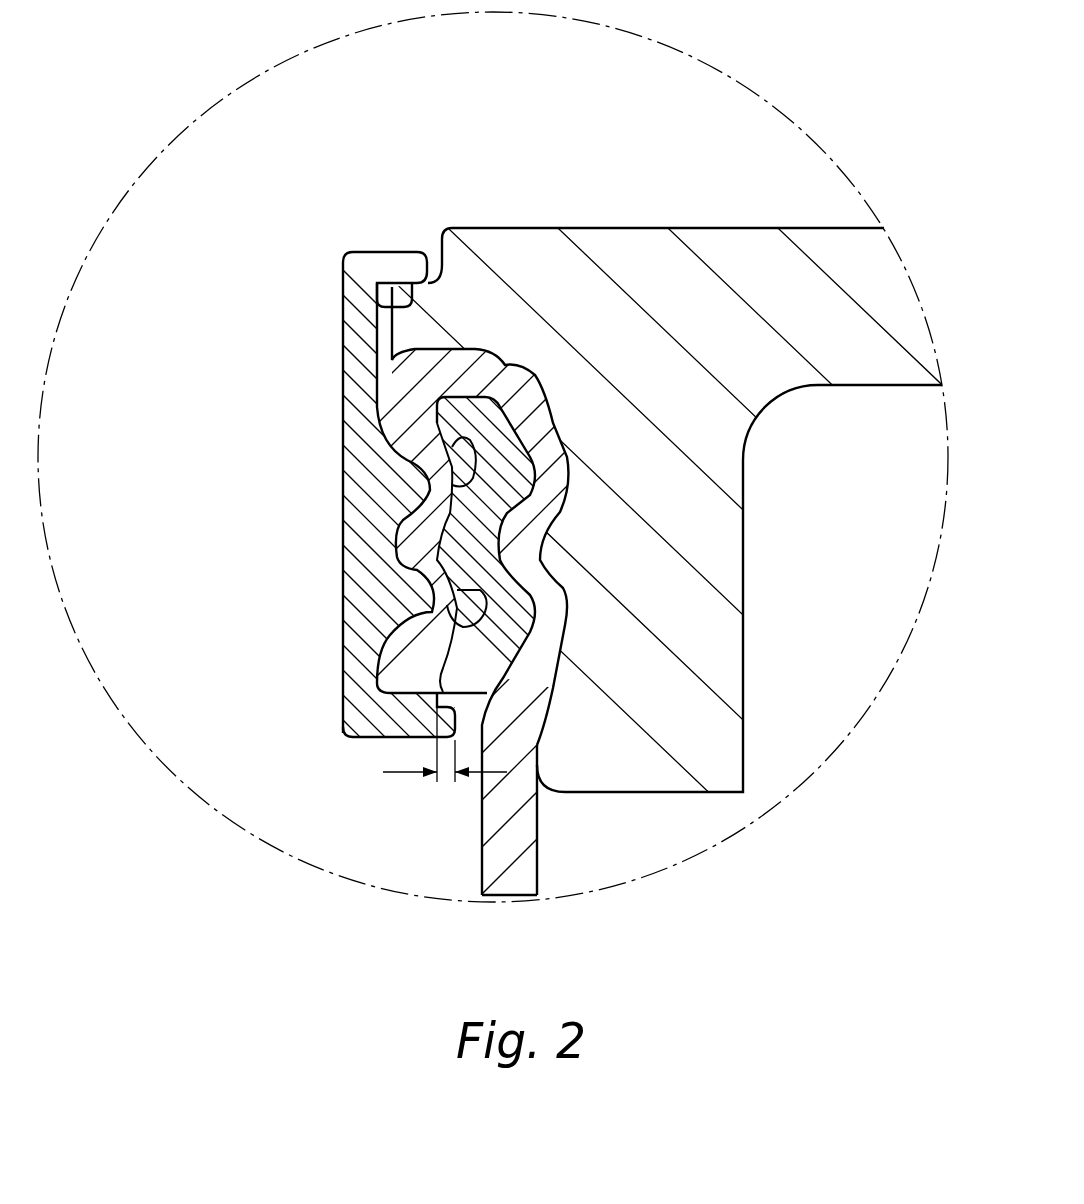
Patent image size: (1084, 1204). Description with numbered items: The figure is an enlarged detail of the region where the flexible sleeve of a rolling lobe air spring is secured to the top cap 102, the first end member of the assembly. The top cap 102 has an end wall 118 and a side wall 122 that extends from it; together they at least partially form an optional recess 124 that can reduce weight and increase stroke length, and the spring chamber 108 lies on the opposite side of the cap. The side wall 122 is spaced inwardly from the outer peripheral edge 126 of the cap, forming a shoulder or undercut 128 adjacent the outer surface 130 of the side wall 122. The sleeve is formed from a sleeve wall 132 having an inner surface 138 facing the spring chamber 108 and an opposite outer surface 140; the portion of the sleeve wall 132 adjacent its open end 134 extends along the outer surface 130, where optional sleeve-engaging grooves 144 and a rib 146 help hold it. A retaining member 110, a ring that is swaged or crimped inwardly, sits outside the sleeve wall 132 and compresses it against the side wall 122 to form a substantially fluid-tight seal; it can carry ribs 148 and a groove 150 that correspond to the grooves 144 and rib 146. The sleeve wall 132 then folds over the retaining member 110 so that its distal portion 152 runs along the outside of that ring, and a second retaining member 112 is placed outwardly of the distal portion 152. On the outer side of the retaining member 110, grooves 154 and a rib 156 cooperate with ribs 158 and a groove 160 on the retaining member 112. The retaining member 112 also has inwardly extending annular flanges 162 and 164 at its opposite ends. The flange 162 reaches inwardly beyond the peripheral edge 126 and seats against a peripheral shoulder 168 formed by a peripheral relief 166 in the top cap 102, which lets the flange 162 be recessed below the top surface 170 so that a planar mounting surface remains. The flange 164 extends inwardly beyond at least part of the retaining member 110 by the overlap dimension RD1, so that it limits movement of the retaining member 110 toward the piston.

The top cap 102 is at (709, 229).
The spring chamber 108 is at (707, 830).
The retaining member 110 is at (484, 662).
The retaining member 112 is at (341, 270).
The end wall 118 is at (812, 285).
The side wall 122 is at (670, 703).
The recess 124 is at (862, 543).
The outer peripheral edge 126 is at (385, 322).
The shoulder or undercut 128 is at (483, 343).
The outer surface 130 is at (568, 584).
The sleeve wall 132 is at (510, 840).
The open end 134 is at (366, 812).
The inner surface 138 is at (540, 860).
The outer surface 140 is at (480, 875).
The grooves 144 is at (570, 488).
The rib 146 is at (547, 543).
The ribs 148 is at (535, 475).
The groove 150 is at (423, 502).
The distal portion 152 is at (430, 547).
The grooves 154 is at (437, 398).
The rib 156 is at (437, 530).
The ribs 158 is at (425, 483).
The groove 160 is at (445, 480).
The annular flange 162 is at (405, 255).
The annular flange 164 is at (400, 730).
The peripheral relief 166 is at (429, 229).
The peripheral shoulder 168 is at (385, 292).
The top surface 170 is at (616, 228).
The overlap dimension RD1 is at (447, 777).